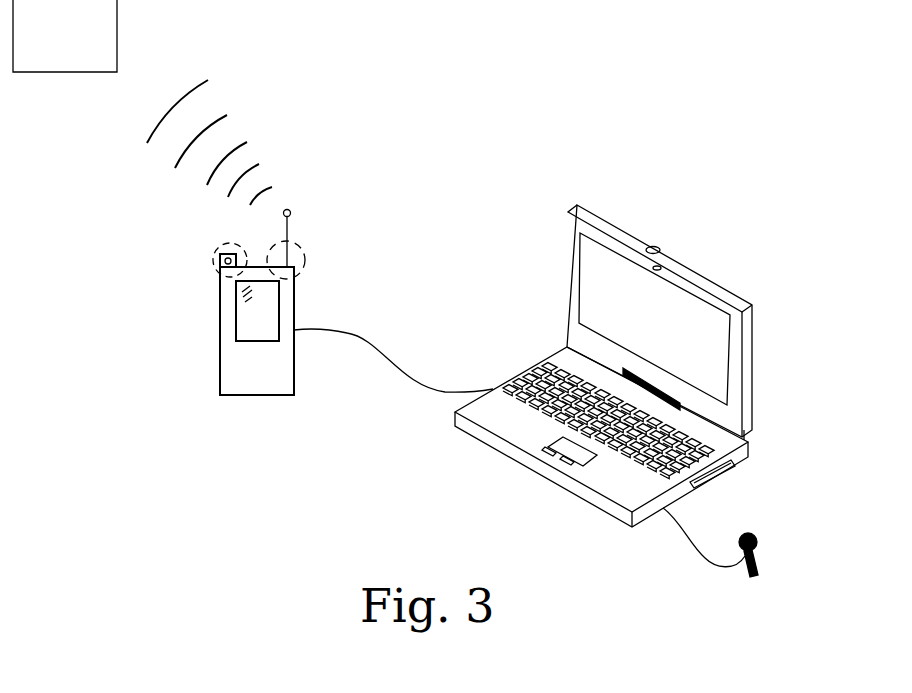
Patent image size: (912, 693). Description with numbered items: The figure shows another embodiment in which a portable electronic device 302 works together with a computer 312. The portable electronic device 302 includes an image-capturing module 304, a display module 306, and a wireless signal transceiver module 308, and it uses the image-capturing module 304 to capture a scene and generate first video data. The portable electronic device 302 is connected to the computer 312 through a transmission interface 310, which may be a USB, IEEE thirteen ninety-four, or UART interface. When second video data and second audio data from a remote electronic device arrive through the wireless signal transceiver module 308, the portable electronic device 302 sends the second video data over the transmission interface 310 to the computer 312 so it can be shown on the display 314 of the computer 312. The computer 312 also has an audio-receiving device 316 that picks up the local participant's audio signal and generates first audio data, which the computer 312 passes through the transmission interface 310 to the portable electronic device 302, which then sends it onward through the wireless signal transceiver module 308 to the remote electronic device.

The portable electronic device 302 is at (218, 328).
The image-capturing module 304 is at (212, 261).
The display module 306 is at (268, 305).
The wireless signal transceiver module 308 is at (305, 262).
The transmission interface 310 is at (382, 370).
The computer 312 is at (740, 467).
The display 314 is at (692, 345).
The audio-receiving device 316 is at (759, 556).